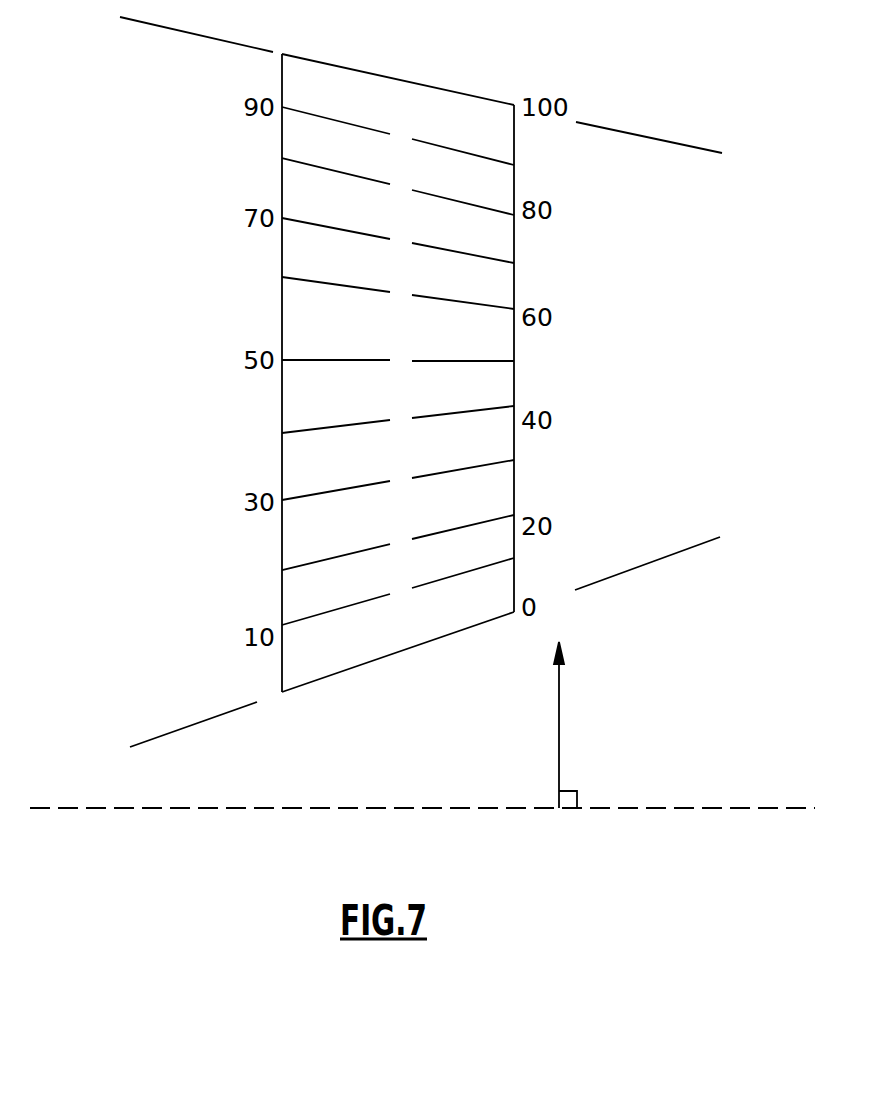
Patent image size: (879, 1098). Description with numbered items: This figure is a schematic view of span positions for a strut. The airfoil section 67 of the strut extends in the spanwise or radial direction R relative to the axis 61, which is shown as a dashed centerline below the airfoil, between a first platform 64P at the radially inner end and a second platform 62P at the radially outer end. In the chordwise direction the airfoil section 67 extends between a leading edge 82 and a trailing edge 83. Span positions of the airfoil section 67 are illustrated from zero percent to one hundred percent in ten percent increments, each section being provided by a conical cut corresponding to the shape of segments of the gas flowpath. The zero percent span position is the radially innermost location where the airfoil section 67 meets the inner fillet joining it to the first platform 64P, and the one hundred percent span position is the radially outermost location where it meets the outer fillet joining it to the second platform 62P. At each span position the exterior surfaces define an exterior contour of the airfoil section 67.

The second platform 62P is at (347, 67).
The first platform 64P is at (383, 657).
The axis 61 is at (327, 808).
The airfoil section 67 is at (420, 373).
The leading edge 82 is at (281, 302).
The trailing edge 83 is at (514, 343).
The radial direction R is at (559, 735).